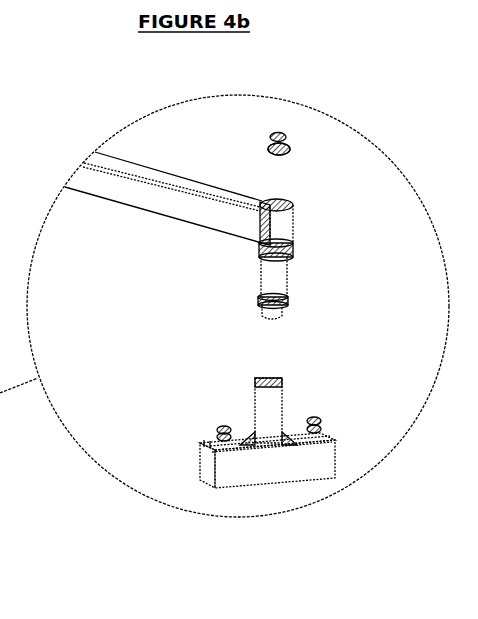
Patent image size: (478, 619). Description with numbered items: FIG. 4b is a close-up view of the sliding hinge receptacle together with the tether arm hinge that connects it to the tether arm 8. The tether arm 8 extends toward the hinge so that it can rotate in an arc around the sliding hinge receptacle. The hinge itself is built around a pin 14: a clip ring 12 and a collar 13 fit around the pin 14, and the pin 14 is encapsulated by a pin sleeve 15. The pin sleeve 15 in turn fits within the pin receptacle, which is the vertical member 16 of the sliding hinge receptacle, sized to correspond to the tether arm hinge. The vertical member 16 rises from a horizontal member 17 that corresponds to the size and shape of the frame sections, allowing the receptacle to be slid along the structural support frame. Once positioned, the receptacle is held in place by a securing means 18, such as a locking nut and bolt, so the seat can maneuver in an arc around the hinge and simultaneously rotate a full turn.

The tether arm 8 is at (128, 206).
The clip ring 12 is at (263, 137).
The collar 13 is at (290, 156).
The pin 14 is at (288, 252).
The pin sleeve 15 is at (260, 277).
The vertical member 16 is at (281, 402).
The horizontal member 17 is at (251, 490).
The securing means 18 is at (323, 413).